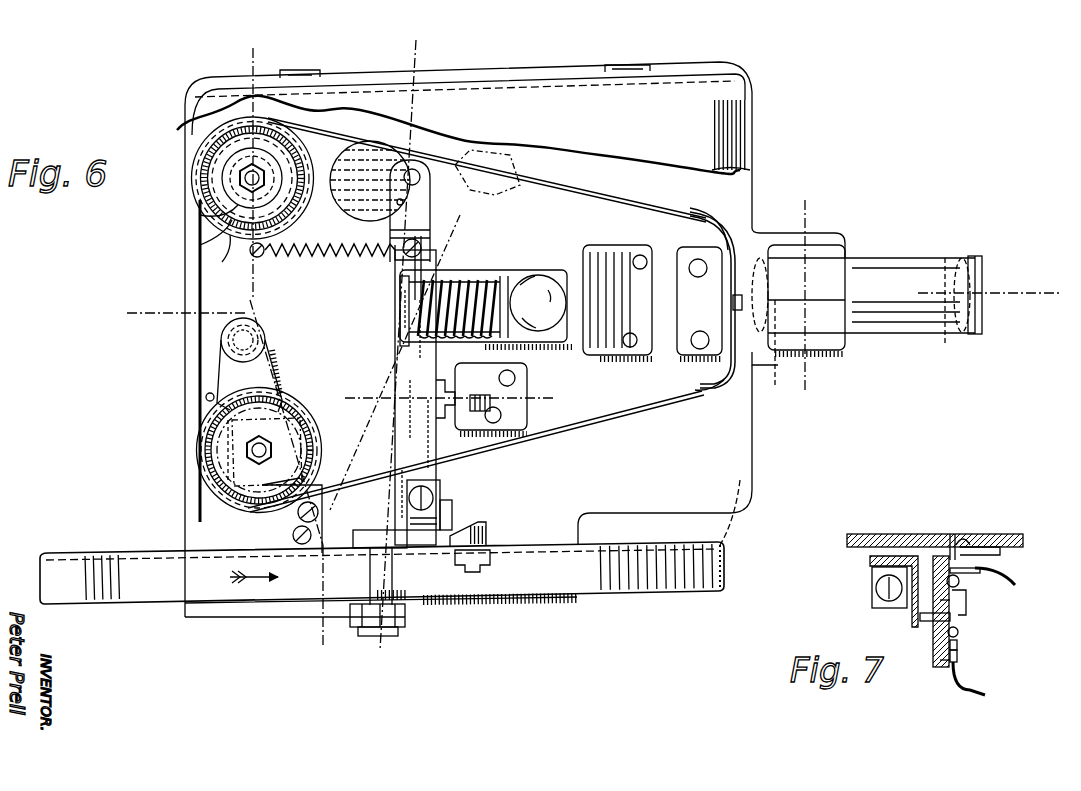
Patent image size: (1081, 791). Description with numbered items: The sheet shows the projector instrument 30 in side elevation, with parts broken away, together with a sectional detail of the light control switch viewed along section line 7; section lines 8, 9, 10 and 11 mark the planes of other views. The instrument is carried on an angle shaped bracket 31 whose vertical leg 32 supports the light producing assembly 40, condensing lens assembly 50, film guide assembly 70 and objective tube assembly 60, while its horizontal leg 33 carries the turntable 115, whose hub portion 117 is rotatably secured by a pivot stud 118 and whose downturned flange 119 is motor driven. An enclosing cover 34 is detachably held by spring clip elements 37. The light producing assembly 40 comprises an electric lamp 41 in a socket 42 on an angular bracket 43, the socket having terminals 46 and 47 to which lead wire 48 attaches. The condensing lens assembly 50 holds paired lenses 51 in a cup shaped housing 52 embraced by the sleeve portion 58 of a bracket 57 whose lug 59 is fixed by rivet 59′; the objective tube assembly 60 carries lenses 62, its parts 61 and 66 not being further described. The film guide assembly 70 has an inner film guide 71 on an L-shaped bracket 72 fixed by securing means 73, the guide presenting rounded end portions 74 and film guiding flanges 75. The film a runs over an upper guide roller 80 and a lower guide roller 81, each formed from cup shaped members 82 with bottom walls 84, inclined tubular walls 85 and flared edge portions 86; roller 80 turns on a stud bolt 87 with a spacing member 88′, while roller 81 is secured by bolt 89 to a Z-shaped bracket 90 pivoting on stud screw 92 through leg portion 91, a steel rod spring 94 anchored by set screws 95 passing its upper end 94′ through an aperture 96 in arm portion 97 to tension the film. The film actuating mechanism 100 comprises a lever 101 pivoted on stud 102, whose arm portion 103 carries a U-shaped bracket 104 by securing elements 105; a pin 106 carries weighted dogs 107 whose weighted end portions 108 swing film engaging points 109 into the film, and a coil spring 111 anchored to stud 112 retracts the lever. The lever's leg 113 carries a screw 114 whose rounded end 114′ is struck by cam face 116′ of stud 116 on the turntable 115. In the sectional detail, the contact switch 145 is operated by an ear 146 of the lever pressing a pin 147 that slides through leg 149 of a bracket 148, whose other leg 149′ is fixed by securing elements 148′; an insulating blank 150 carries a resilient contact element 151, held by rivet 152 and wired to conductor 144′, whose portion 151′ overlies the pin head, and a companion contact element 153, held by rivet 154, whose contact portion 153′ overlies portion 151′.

In FIG. 6, the projector instrument 30 is at (172, 96).
In FIG. 6, the angle shaped bracket 31 is at (545, 72).
In FIG. 6, the vertical leg 32 is at (562, 80).
In FIG. 7, the vertical leg 32 is at (868, 534).
In FIG. 6, the horizontal leg 33 is at (232, 610).
In FIG. 6, the enclosing cover 34 is at (722, 130).
In FIG. 6, the spring clip elements 37 is at (305, 74).
In FIG. 6, the light producing assembly 40 is at (500, 268).
In FIG. 6, the electric lamp 41 is at (540, 285).
In FIG. 6, the receiving socket 42 is at (470, 300).
In FIG. 6, the angular bracket 43 is at (447, 290).
In FIG. 6, the electric terminal 46 is at (402, 256).
In FIG. 6, the electric terminal 47 is at (397, 356).
In FIG. 7, the electric lead wire 48 is at (1015, 575).
In FIG. 6, the condensing lens assembly 50 is at (612, 243).
In FIG. 6, the light condensing lenses 51 is at (592, 330).
In FIG. 6, the cup shaped housing 52 is at (620, 358).
In FIG. 6, the bracket 57 is at (594, 252).
In FIG. 6, the sleeve portion 58 is at (600, 356).
In FIG. 6, the lug 59 is at (648, 356).
In FIG. 6, the rivet 59′ is at (640, 258).
In FIG. 6, the objective tube assembly 60 is at (893, 250).
In FIG. 6, the tube end 61 is at (925, 262).
In FIG. 6, the lenses 62 is at (854, 332).
In FIG. 6, the clamp 66 is at (822, 245).
In FIG. 6, the film guide assembly 70 is at (712, 208).
In FIG. 6, the inner film guide 71 is at (733, 250).
In FIG. 6, the L-shaped bracket 72 is at (684, 250).
In FIG. 6, the securing means 73 is at (698, 336).
In FIG. 6, the rounded end portions 74 is at (716, 220).
In FIG. 6, the film guiding flanges 75 is at (742, 312).
In FIG. 6, the upper guide roller 80 is at (190, 158).
In FIG. 6, the lower guide roller 81 is at (200, 482).
In FIG. 6, the cup shaped member 82 is at (230, 224).
In FIG. 6, the bottom walls 84 is at (205, 246).
In FIG. 6, the tubular walls 85 is at (215, 212).
In FIG. 6, the flared edge portions 86 is at (220, 262).
In FIG. 6, the stud bolt 87 is at (239, 178).
In FIG. 6, the spacing member 88′ is at (228, 196).
In FIG. 6, the bolt 89 is at (245, 455).
In FIG. 6, the Z-shaped bracket 90 is at (215, 378).
In FIG. 6, the leg portion 91 is at (225, 387).
In FIG. 6, the stud screw 92 is at (224, 341).
In FIG. 6, the steel rod spring 94 is at (252, 505).
In FIG. 6, the upper end 94′ is at (212, 418).
In FIG. 6, the set screws 95 is at (296, 524).
In FIG. 6, the aperture 96 is at (290, 400).
In FIG. 6, the arm portion 97 is at (205, 450).
In FIG. 6, the film actuating mechanism 100 is at (732, 532).
In FIG. 6, the lever 101 is at (408, 380).
In FIG. 7, the lever 101 is at (893, 554).
In FIG. 6, the stud 102 is at (395, 290).
In FIG. 6, the inwardly extending arm portion 103 is at (395, 245).
In FIG. 6, the U-shaped bracket 104 is at (432, 170).
In FIG. 6, the securing elements 105 is at (470, 240).
In FIG. 6, the pin 106 is at (420, 170).
In FIG. 6, the weighted dogs 107 is at (380, 142).
In FIG. 6, the weighted end portion 108 is at (342, 155).
In FIG. 6, the film engaging point 109 is at (492, 150).
In FIG. 6, the coil spring 111 is at (312, 258).
In FIG. 6, the stud 112 is at (252, 255).
In FIG. 6, the inwardly extending leg 113 is at (442, 515).
In FIG. 7, the inwardly extending leg 113 is at (872, 572).
In FIG. 6, the adjustably mounted screw 114 is at (424, 492).
In FIG. 7, the adjustably mounted screw 114 is at (878, 588).
In FIG. 6, the rounded camming end 114′ is at (405, 602).
In FIG. 6, the turntable 115 is at (663, 577).
In FIG. 6, the stud 116 is at (490, 538).
In FIG. 6, the cam face 116′ is at (462, 530).
In FIG. 6, the hub portion 117 is at (378, 615).
In FIG. 6, the pivot stud 118 is at (400, 636).
In FIG. 6, the downturned flange 119 is at (729, 574).
In FIG. 7, the conductor 144′ is at (972, 702).
In FIG. 6, the contact switch 145 is at (537, 424).
In FIG. 7, the contact switch 145 is at (852, 632).
In FIG. 7, the ear 146 is at (912, 618).
In FIG. 7, the pin 147 is at (926, 621).
In FIG. 7, the bracket 148 is at (952, 532).
In FIG. 7, the securing elements 148′ is at (968, 542).
In FIG. 7, the inwardly projecting leg 149 is at (940, 620).
In FIG. 7, the other leg 149′ is at (998, 546).
In FIG. 7, the insulating blank 150 is at (945, 665).
In FIG. 7, the resilient metal contact element 151 is at (957, 660).
In FIG. 7, the resilient metal portion 151′ is at (958, 630).
In FIG. 7, the rivet 152 is at (957, 646).
In FIG. 7, the companion contact element 153 is at (982, 568).
In FIG. 7, the contact portion 153′ is at (968, 600).
In FIG. 7, the rivet 154 is at (960, 581).
In FIG. 6, the section line 7 is at (352, 376).
In FIG. 6, the section line 8 is at (130, 292).
In FIG. 6, the section line 9 is at (828, 205).
In FIG. 6, the section line 10 is at (413, 37).
In FIG. 6, the section line 11 is at (278, 50).
In FIG. 6, the picture film a is at (600, 192).